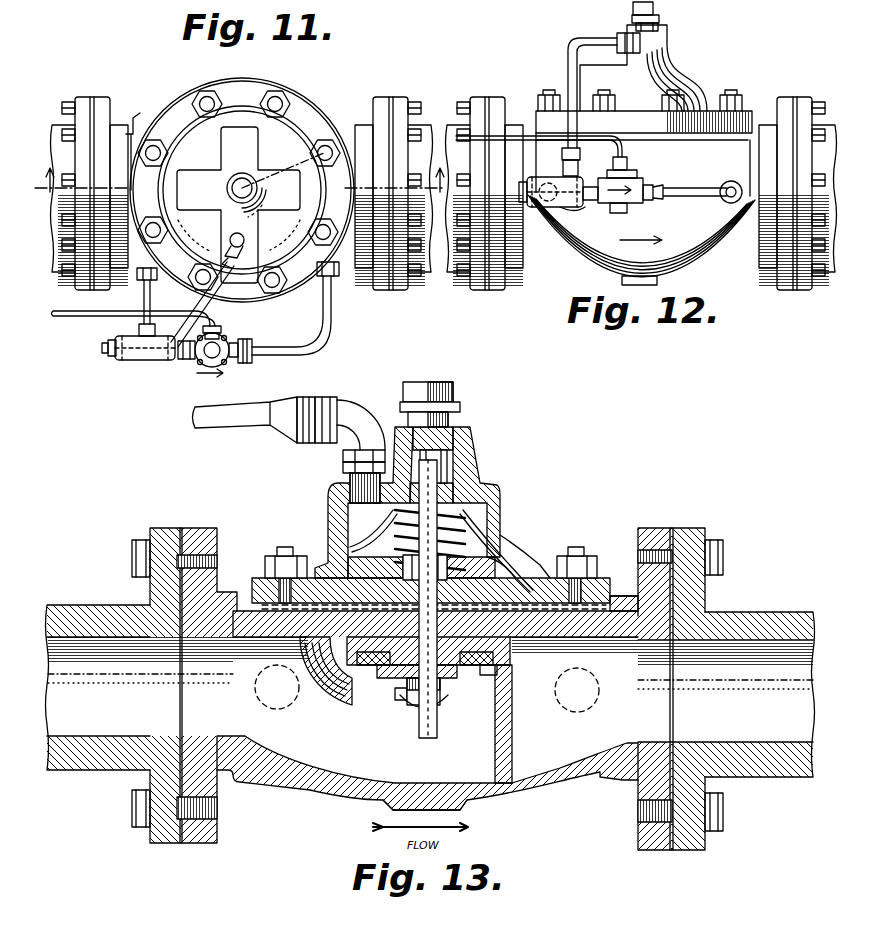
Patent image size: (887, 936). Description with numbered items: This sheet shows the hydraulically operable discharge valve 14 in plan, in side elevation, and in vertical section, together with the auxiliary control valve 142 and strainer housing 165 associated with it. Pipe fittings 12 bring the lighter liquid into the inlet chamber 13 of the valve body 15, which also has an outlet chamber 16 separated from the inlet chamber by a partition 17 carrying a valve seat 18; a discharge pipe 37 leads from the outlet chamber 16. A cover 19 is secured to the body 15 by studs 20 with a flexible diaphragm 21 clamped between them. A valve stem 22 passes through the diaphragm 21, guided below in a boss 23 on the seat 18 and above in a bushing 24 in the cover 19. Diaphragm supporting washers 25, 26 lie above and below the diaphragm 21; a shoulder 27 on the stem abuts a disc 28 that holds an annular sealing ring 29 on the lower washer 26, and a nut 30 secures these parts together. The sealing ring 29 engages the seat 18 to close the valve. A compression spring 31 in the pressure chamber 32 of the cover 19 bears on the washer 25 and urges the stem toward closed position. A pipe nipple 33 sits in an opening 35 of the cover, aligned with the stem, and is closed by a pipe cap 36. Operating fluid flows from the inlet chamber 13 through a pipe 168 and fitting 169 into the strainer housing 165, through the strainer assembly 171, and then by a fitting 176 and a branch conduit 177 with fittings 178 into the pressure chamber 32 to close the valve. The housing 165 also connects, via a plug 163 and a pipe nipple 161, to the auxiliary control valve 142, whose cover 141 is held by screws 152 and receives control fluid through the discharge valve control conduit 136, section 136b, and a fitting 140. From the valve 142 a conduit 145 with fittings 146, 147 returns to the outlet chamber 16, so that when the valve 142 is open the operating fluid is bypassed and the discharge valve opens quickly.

In FIG. 11, the pipe fittings 12 is at (54, 258).
In FIG. 12, the pipe fittings 12 is at (448, 242).
In FIG. 13, the pipe fittings 12 is at (108, 605).
In FIG. 11, the inlet chamber 13 is at (241, 172).
In FIG. 13, the inlet chamber 13 is at (323, 752).
In FIG. 11, the discharge valve 14 is at (306, 100).
In FIG. 12, the discharge valve 14 is at (577, 270).
In FIG. 13, the discharge valve 14 is at (515, 790).
In FIG. 11, the body 15 is at (140, 113).
In FIG. 12, the body 15 is at (727, 258).
In FIG. 13, the body 15 is at (386, 796).
In FIG. 13, the outlet chamber 16 is at (576, 752).
In FIG. 13, the partition 17 is at (513, 729).
In FIG. 13, the valve seat 18 is at (500, 670).
In FIG. 11, the cover 19 is at (186, 108).
In FIG. 12, the cover 19 is at (755, 114).
In FIG. 13, the cover 19 is at (512, 548).
In FIG. 11, the studs 20 is at (276, 97).
In FIG. 12, the studs 20 is at (549, 100).
In FIG. 13, the studs 20 is at (285, 546).
In FIG. 13, the flexible diaphragm 21 is at (608, 580).
In FIG. 13, the valve stem 22 is at (418, 729).
In FIG. 13, the boss 23 is at (443, 705).
In FIG. 13, the bushing 24 is at (456, 489).
In FIG. 13, the diaphragm supporting washer 25 is at (507, 603).
In FIG. 13, the diaphragm supporting washer 26 is at (510, 640).
In FIG. 13, the shoulder 27 is at (396, 698).
In FIG. 13, the disc 28 is at (462, 680).
In FIG. 13, the annular sealing ring 29 is at (505, 658).
In FIG. 13, the nut 30 is at (450, 571).
In FIG. 13, the compression spring 31 is at (470, 520).
In FIG. 13, the pressure chamber 32 is at (340, 506).
In FIG. 12, the pipe nipple 33 is at (660, 26).
In FIG. 13, the pipe nipple 33 is at (456, 441).
In FIG. 13, the opening 35 is at (448, 463).
In FIG. 11, the pipe cap 36 is at (242, 178).
In FIG. 12, the pipe cap 36 is at (656, 8).
In FIG. 13, the pipe cap 36 is at (432, 382).
In FIG. 11, the discharge pipe 37 is at (418, 126).
In FIG. 12, the discharge pipe 37 is at (818, 266).
In FIG. 13, the discharge pipe 37 is at (760, 612).
In FIG. 11, the discharge valve control conduit 136 is at (80, 318).
In FIG. 12, the conduit section 136b is at (626, 143).
In FIG. 11, the fitting 140 is at (226, 328).
In FIG. 12, the fitting 140 is at (628, 164).
In FIG. 11, the cover 141 is at (232, 338).
In FIG. 12, the cover 141 is at (643, 178).
In FIG. 11, the auxiliary control valve 142 is at (192, 369).
In FIG. 12, the auxiliary control valve 142 is at (606, 213).
In FIG. 11, the conduit 145 is at (333, 323).
In FIG. 12, the conduit 145 is at (691, 186).
In FIG. 13, the conduit 145 is at (567, 708).
In FIG. 11, the fitting 146 is at (248, 362).
In FIG. 12, the fitting 146 is at (630, 208).
In FIG. 11, the fitting 147 is at (338, 280).
In FIG. 11, the screws 152 is at (222, 367).
In FIG. 12, the pipe nipple 161 is at (594, 186).
In FIG. 11, the plug 163 is at (150, 338).
In FIG. 12, the plug 163 is at (578, 209).
In FIG. 11, the strainer housing 165 is at (132, 362).
In FIG. 12, the strainer housing 165 is at (532, 206).
In FIG. 11, the pipe 168 is at (143, 299).
In FIG. 12, the pipe 168 is at (548, 184).
In FIG. 13, the pipe 168 is at (290, 705).
In FIG. 11, the fitting 169 is at (140, 282).
In FIG. 11, the strainer assembly 171 is at (106, 355).
In FIG. 11, the fitting 176 is at (166, 345).
In FIG. 12, the fitting 176 is at (582, 150).
In FIG. 11, the branch conduit 177 is at (197, 308).
In FIG. 12, the branch conduit 177 is at (580, 41).
In FIG. 13, the branch conduit 177 is at (226, 428).
In FIG. 11, the fittings 178 is at (236, 242).
In FIG. 12, the fittings 178 is at (619, 34).
In FIG. 13, the fittings 178 is at (326, 397).